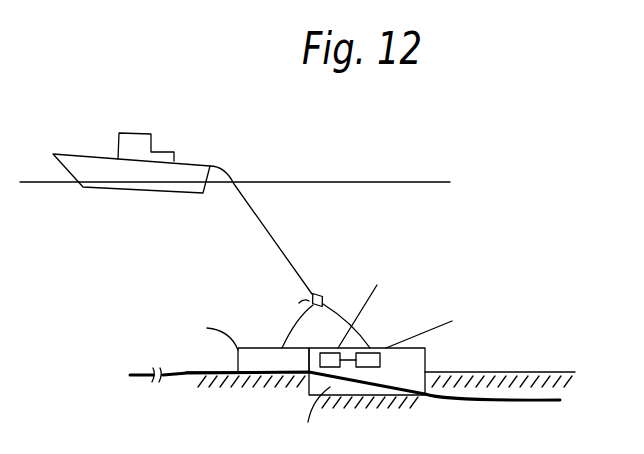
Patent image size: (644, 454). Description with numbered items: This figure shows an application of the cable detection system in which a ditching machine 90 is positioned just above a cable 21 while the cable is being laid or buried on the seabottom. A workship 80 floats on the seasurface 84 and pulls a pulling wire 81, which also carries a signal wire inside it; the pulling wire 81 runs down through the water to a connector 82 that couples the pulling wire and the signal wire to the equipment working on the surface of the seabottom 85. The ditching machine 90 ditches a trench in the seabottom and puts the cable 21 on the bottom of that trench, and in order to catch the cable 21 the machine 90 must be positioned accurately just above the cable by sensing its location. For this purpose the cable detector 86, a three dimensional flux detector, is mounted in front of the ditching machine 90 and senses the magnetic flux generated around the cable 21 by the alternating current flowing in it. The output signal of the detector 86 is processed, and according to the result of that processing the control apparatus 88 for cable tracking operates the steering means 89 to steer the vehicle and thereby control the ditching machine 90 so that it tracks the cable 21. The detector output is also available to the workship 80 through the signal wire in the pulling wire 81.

The workship 80 is at (145, 145).
The pulling wire 81 is at (283, 250).
The connector 82 is at (325, 294).
The seasurface 84 is at (405, 181).
The surface of the seabottom 85 is at (530, 373).
The cable detector 86 is at (268, 360).
The control apparatus 88 is at (327, 353).
The steering means 89 is at (377, 359).
The ditching machine 90 is at (425, 358).
The cable 21 is at (185, 378).